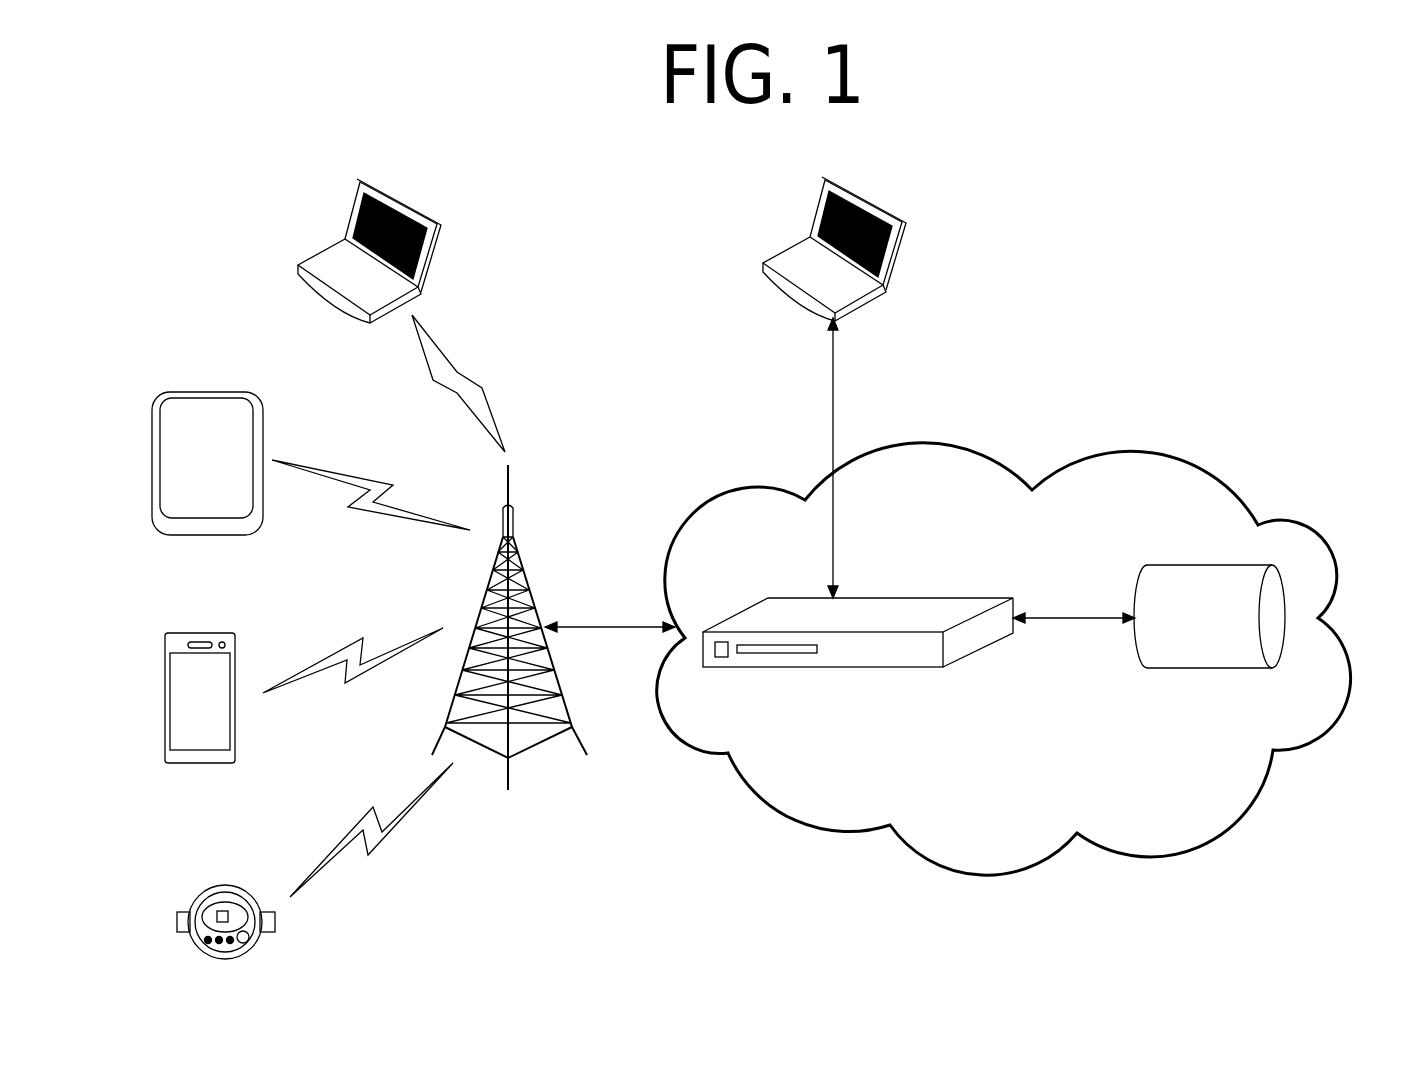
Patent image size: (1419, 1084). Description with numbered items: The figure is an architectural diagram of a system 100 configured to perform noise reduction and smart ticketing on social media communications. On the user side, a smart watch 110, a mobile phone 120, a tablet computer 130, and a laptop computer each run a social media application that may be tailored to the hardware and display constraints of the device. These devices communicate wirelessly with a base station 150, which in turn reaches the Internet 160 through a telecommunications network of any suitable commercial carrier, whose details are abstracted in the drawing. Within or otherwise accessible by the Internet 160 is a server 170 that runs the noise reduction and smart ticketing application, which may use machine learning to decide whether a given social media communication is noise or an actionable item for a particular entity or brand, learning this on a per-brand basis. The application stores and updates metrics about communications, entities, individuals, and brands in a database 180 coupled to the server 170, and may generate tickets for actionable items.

The system 100 is at (262, 144).
The smart watch 110 is at (238, 884).
The mobile phone 120 is at (236, 651).
The tablet computer 130 is at (261, 416).
The base station 150 is at (532, 588).
The Internet 160 is at (765, 822).
The server 170 is at (862, 615).
The database 180 is at (1202, 668).